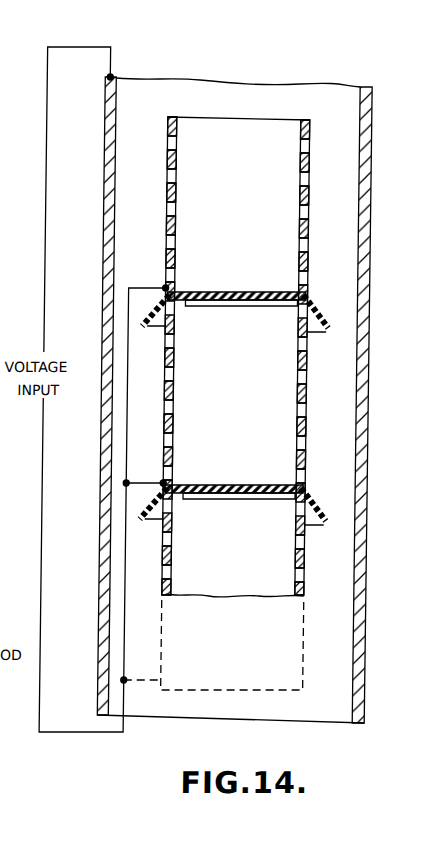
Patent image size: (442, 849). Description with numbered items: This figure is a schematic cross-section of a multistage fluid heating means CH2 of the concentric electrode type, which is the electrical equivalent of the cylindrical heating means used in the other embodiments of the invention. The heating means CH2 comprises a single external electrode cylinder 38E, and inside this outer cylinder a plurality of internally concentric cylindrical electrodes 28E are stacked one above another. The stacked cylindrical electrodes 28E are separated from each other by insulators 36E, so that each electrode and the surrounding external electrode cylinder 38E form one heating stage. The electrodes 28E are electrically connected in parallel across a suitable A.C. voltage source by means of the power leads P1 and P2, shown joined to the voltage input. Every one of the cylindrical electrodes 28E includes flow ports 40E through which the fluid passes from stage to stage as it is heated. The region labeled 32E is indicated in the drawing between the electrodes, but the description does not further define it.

The internally concentric cylindrical electrode 28E is at (304, 232).
The annular channel 32E is at (319, 178).
The insulator 36E is at (313, 322).
The external electrode cylinder 38E is at (366, 530).
The flow port 40E is at (177, 142).
The multistage fluid heating means CH2 is at (419, 289).
The power lead P1 is at (97, 30).
The power lead P2 is at (93, 732).